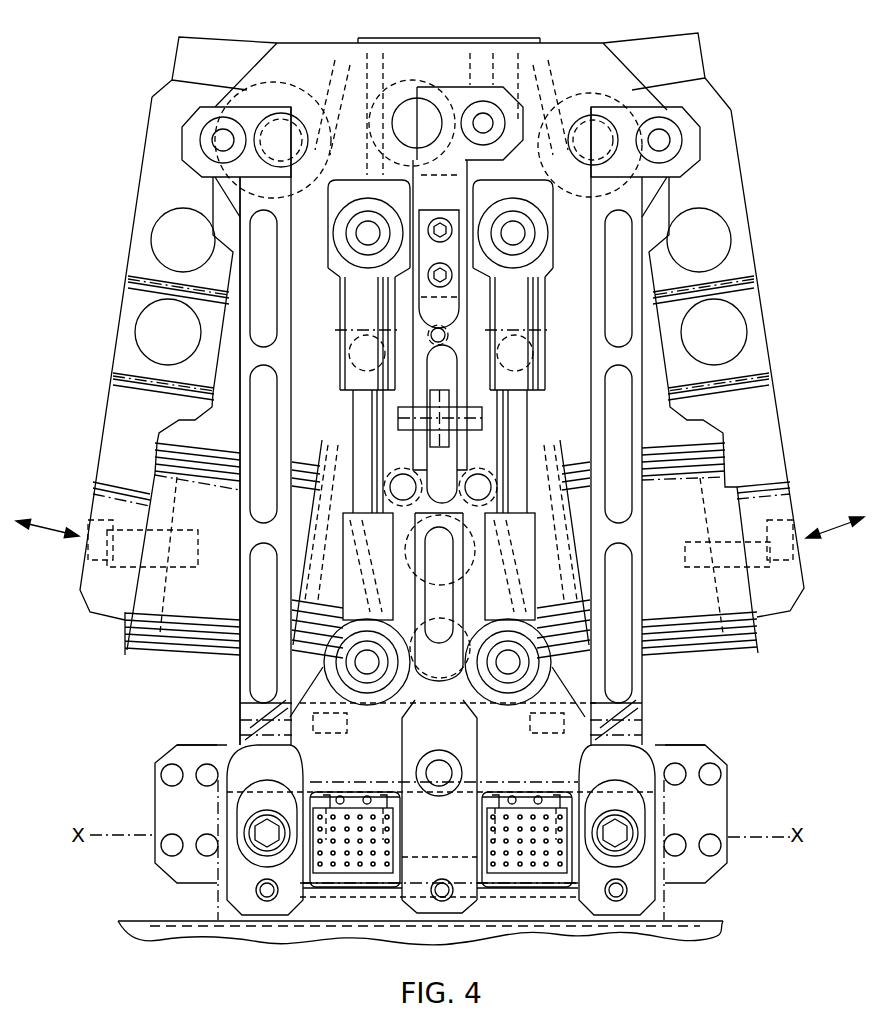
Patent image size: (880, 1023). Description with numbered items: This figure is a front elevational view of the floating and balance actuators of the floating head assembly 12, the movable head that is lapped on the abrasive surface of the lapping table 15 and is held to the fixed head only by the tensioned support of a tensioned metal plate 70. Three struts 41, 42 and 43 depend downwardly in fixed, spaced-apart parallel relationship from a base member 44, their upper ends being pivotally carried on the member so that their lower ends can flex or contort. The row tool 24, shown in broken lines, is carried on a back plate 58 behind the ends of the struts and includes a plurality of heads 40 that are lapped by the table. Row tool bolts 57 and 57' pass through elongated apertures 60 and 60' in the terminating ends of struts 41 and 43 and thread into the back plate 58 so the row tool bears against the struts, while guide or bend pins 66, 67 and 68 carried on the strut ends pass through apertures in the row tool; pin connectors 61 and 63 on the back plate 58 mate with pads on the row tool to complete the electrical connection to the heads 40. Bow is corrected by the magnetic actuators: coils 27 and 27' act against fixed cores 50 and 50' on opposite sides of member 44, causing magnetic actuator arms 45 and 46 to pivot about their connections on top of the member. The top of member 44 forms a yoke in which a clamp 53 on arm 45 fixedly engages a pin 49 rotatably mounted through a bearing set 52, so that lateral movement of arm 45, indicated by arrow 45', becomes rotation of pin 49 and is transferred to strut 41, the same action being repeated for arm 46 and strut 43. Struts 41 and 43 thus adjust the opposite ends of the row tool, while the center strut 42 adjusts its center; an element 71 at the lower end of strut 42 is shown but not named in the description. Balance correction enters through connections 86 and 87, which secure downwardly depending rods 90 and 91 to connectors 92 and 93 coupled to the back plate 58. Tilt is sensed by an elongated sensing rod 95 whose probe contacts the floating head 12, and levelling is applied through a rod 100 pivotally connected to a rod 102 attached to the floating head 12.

The floating head assembly 12 is at (236, 287).
The lapping table 15 is at (698, 921).
The row tool 24 is at (217, 805).
The magnetic actuator coil 27 is at (234, 647).
The magnetic actuator coil 27' is at (647, 648).
The heads 40 is at (588, 927).
The strut 41 is at (253, 753).
The center strut 42 is at (463, 748).
The strut 43 is at (627, 760).
The base member 44 is at (573, 43).
The magnetic actuator arm 45 is at (198, 373).
The arrow 45' is at (440, 514).
The magnetic actuator arm 46 is at (753, 357).
The pin 49 is at (297, 123).
The core 50 is at (357, 542).
The core 50' is at (524, 542).
The bearing set 52 is at (282, 113).
The clamp 53 is at (217, 43).
The row tool bolt 57 is at (211, 823).
The row tool bolt 57' is at (673, 823).
The back plate 58 is at (193, 760).
The elongated aperture 60 is at (277, 828).
The elongated aperture 60' is at (601, 828).
The pin connector 61 is at (332, 874).
The pin connector 63 is at (528, 868).
The guide pin 66 is at (267, 901).
The guide pin 67 is at (442, 901).
The guide pin 68 is at (617, 901).
The tensioned metal plate 70 is at (372, 889).
The center bore 71 is at (437, 778).
The connection 86 is at (363, 235).
The connection 87 is at (517, 237).
The rod 90 is at (366, 428).
The rod 91 is at (520, 428).
The connector 92 is at (381, 673).
The connector 93 is at (496, 673).
The sensing rod 95 is at (505, 337).
The rod 100 is at (498, 404).
The rod 102 is at (355, 435).